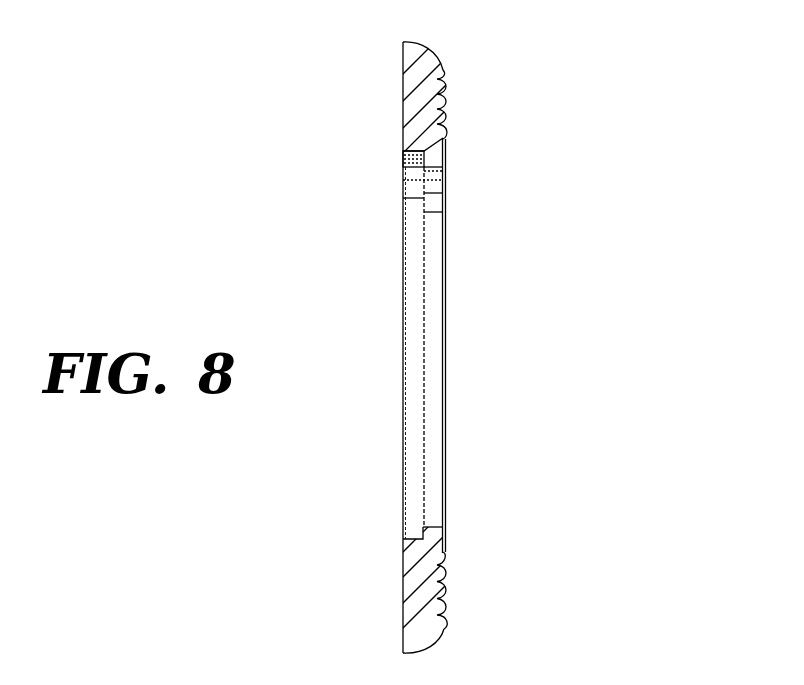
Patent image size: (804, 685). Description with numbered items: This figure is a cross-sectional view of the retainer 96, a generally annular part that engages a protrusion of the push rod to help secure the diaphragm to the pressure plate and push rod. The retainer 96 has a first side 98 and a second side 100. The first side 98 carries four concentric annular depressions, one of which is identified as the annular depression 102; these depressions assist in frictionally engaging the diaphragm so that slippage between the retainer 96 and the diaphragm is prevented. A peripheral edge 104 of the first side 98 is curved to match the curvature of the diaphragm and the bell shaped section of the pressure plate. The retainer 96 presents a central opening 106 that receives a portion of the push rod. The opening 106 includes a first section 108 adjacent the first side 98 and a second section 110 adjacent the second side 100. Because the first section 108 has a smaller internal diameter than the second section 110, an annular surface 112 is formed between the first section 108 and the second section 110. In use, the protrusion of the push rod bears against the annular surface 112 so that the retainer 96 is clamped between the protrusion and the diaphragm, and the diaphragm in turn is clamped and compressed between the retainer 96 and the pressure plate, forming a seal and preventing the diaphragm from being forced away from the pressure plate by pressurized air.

The retainer 96 is at (507, 141).
The first side 98 is at (445, 541).
The second side 100 is at (412, 587).
The annular depression 102 is at (442, 135).
The peripheral edge 104 is at (413, 44).
The central opening 106 is at (432, 165).
The first section 108 is at (440, 527).
The second section 110 is at (413, 537).
The annular surface 112 is at (403, 168).